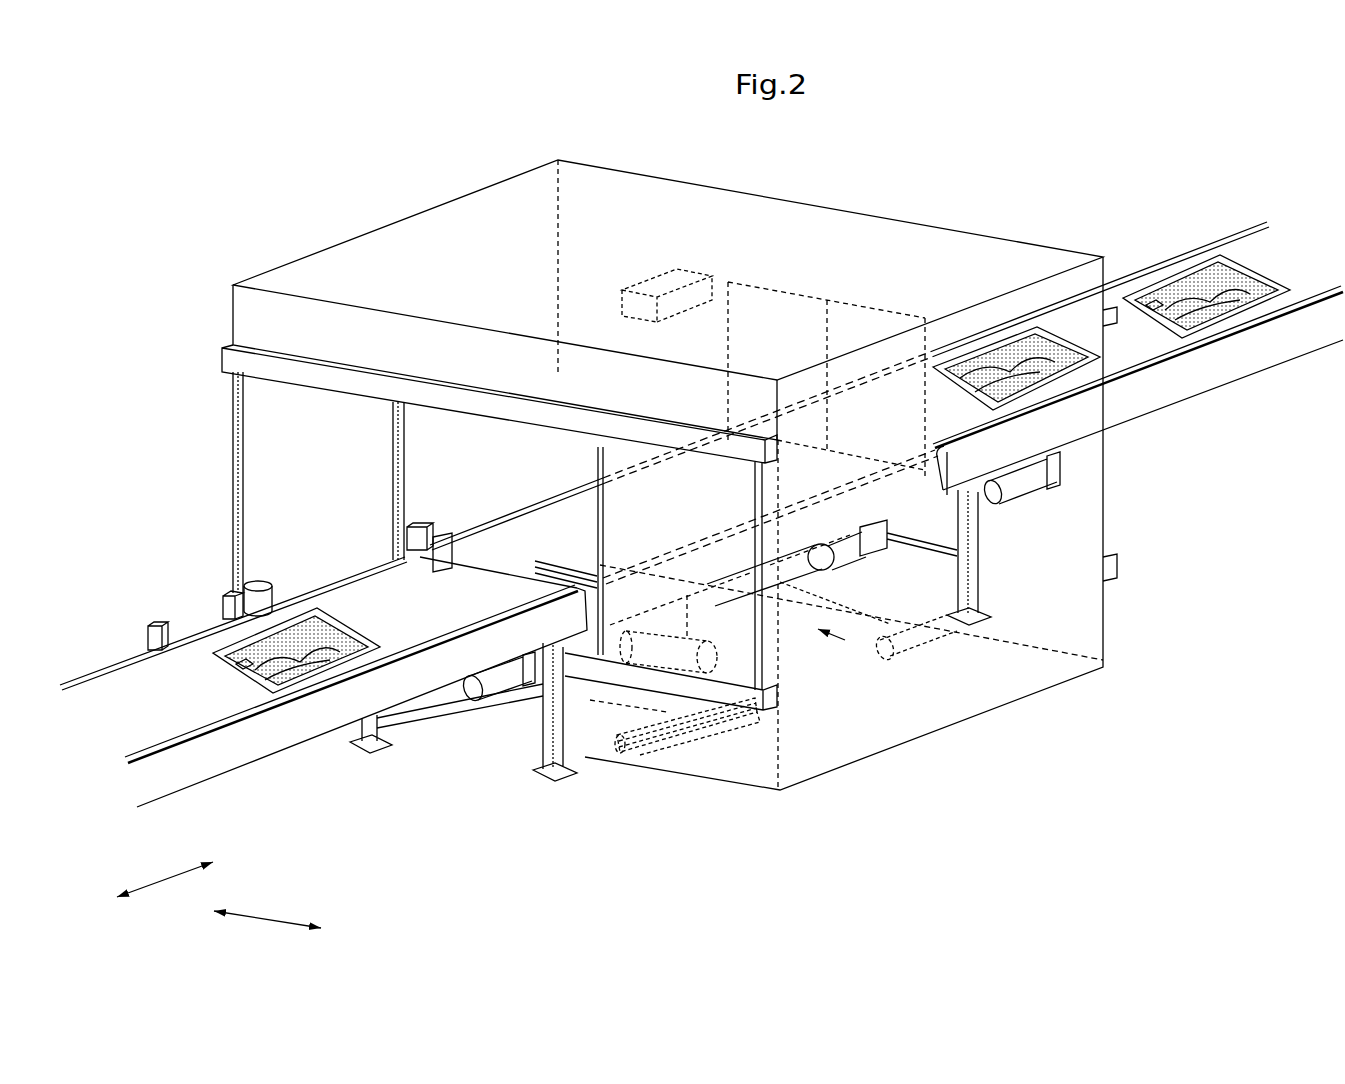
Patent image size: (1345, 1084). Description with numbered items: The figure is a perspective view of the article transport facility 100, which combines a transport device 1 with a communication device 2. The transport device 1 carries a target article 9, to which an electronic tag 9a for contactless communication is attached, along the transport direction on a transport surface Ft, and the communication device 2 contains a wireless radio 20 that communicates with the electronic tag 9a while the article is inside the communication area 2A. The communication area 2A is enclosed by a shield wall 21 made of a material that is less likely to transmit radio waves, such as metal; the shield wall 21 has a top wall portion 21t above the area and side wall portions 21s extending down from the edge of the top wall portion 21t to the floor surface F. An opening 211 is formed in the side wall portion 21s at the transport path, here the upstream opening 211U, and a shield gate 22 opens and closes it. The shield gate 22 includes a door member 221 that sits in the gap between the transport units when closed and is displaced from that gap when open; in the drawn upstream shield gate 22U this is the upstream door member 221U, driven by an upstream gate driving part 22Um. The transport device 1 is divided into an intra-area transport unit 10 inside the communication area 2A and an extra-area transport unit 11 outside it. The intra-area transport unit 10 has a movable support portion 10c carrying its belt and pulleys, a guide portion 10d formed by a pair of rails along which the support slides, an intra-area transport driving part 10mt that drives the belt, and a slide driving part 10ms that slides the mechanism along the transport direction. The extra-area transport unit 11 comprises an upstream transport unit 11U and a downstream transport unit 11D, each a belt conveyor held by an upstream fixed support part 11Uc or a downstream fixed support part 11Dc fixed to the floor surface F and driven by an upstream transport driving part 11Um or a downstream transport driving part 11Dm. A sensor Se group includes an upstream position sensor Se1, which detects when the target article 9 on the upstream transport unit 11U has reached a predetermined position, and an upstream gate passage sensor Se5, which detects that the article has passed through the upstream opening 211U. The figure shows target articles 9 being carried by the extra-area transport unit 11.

The article transport facility 100 is at (245, 158).
The communication device 2 is at (355, 196).
The communication area 2A is at (478, 245).
The shield wall 21 is at (851, 464).
The top wall portion 21t is at (690, 228).
The side wall portion 21s is at (988, 664).
The shield gate 22 is at (436, 489).
The upstream shield gate 22U is at (216, 348).
The door member 221 is at (213, 495).
The upstream door member 221U is at (288, 440).
The opening 211 is at (383, 481).
The upstream opening 211U is at (450, 490).
The upstream gate driving part 22Um is at (254, 582).
The wireless radio 20 is at (650, 285).
The transport device 1 is at (701, 472).
The intra-area transport unit 10 is at (521, 474).
The movable support portion 10c is at (876, 642).
The guide portion 10d is at (752, 716).
The slide driving part 10ms is at (822, 702).
The intra-area transport driving part 10mt is at (846, 573).
The extra-area transport unit 11 is at (701, 472).
The upstream transport unit 11U is at (110, 640).
The upstream fixed support part 11Uc is at (362, 740).
The upstream transport driving part 11Um is at (472, 692).
The downstream transport unit 11D is at (1158, 250).
The downstream fixed support part 11Dc is at (978, 534).
The downstream transport driving part 11Dm is at (1014, 498).
The sensor Se is at (306, 586).
The upstream position sensor Se1 is at (152, 622).
The upstream gate passage sensor Se5 is at (435, 576).
The transport surface Ft is at (176, 696).
The target article 9 is at (350, 608).
The electronic tag 9a is at (256, 668).
The floor surface F is at (1126, 720).